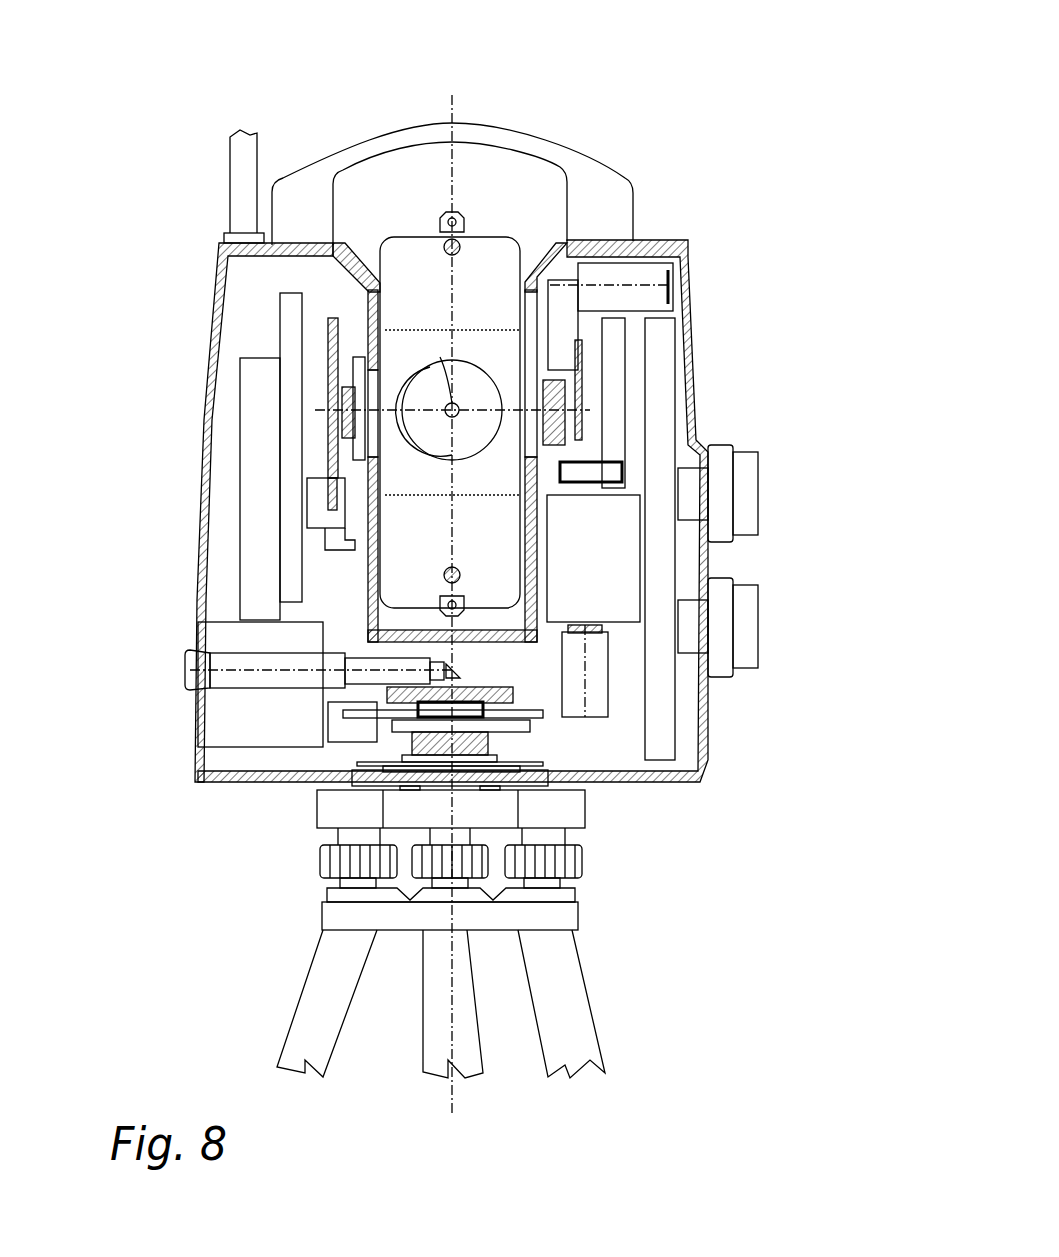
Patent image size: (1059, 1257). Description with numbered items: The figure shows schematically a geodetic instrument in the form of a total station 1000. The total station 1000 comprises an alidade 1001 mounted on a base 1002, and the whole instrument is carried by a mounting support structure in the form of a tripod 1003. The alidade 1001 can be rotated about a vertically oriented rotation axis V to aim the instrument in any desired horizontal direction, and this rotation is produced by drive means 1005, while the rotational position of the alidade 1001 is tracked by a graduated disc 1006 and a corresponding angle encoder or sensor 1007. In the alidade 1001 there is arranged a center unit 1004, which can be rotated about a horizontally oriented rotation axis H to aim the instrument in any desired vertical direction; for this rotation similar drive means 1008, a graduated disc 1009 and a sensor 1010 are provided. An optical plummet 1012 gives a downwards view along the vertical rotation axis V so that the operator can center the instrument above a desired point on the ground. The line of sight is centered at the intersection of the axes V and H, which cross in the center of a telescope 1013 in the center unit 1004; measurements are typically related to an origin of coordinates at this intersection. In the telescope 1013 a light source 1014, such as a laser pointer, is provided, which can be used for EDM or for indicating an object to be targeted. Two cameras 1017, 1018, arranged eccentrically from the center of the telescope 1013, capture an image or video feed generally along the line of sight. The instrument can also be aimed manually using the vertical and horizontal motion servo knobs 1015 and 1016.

The total station 1000 is at (676, 121).
The alidade 1001 is at (706, 794).
The base 1002 is at (562, 810).
The tripod 1003 is at (570, 980).
The center unit 1004 is at (490, 277).
The drive means 1005 is at (600, 700).
The graduated disc 1006 is at (385, 716).
The angle encoder or sensor 1007 is at (340, 730).
The drive means 1008 is at (657, 280).
The graduated disc 1009 is at (335, 470).
The sensor 1010 is at (318, 518).
The optical plummet 1012 is at (198, 662).
The telescope 1013 is at (423, 400).
The light source 1014 is at (437, 346).
The vertical motion servo knob 1015 is at (747, 481).
The horizontal motion servo knob 1016 is at (747, 616).
The camera 1017 is at (456, 244).
The camera 1018 is at (447, 572).
The vertically oriented rotation axis V is at (452, 104).
The horizontally oriented rotation axis H is at (590, 408).